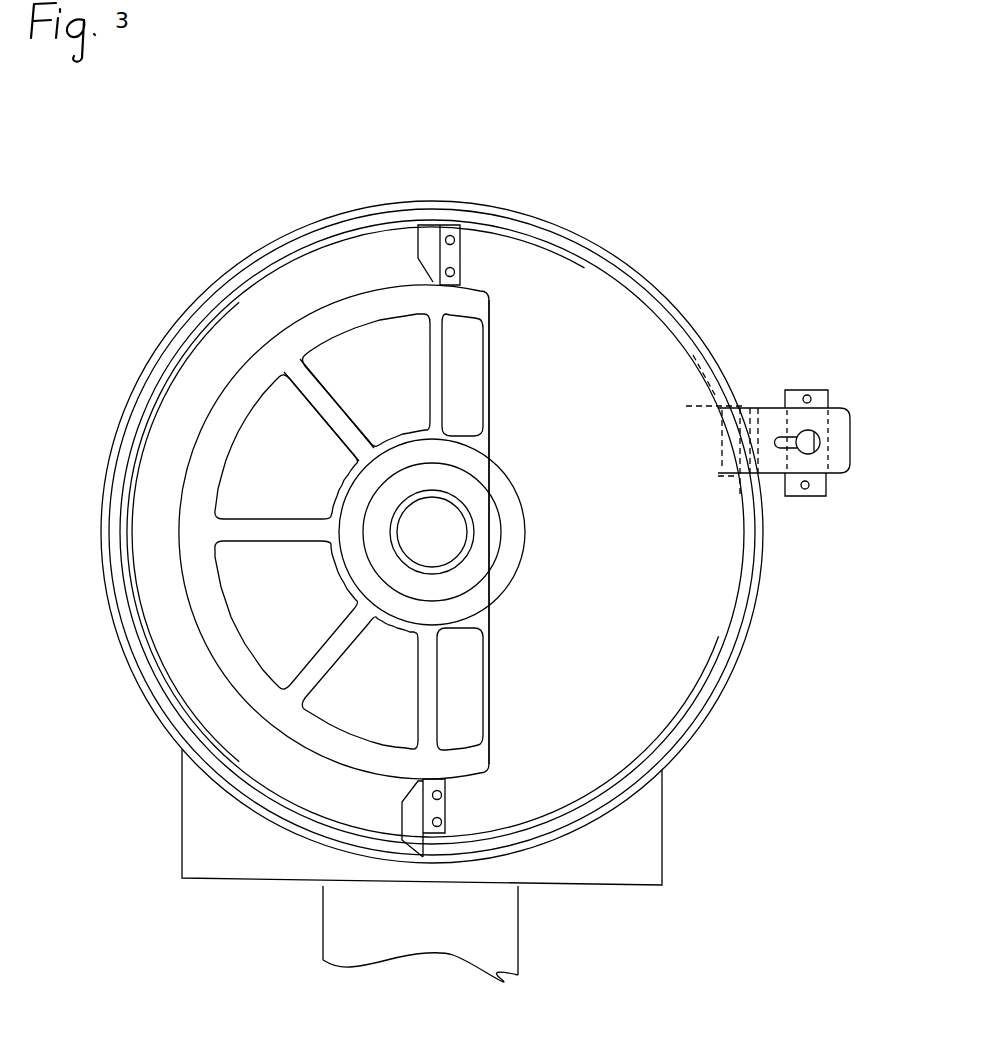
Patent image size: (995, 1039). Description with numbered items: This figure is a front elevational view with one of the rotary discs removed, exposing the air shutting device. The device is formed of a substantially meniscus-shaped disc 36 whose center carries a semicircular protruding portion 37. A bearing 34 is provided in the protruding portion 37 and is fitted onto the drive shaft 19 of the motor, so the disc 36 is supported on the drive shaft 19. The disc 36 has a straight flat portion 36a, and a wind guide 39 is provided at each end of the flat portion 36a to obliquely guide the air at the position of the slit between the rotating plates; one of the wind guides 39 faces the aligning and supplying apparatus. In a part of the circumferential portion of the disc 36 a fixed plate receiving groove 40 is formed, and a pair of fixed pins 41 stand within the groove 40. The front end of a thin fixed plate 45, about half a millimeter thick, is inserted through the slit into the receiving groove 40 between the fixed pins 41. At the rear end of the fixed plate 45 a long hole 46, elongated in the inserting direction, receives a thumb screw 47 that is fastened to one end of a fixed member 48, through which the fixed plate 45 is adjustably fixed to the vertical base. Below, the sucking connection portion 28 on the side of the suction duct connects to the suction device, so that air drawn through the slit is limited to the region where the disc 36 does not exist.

The drive shaft 19 is at (417, 538).
The sucking connection portion 28 is at (497, 940).
The bearing 34 is at (357, 468).
The disc 36 is at (658, 687).
The flat portion 36a is at (490, 363).
The semicircular protruding portion 37 is at (377, 473).
The wind guide 39 is at (434, 218).
The fixed plate receiving groove 40 is at (722, 378).
The fixed pins 41 is at (742, 383).
The fixed plate 45 is at (835, 465).
The long hole 46 is at (808, 398).
The thumb screw 47 is at (813, 433).
The fixed member 48 is at (823, 497).